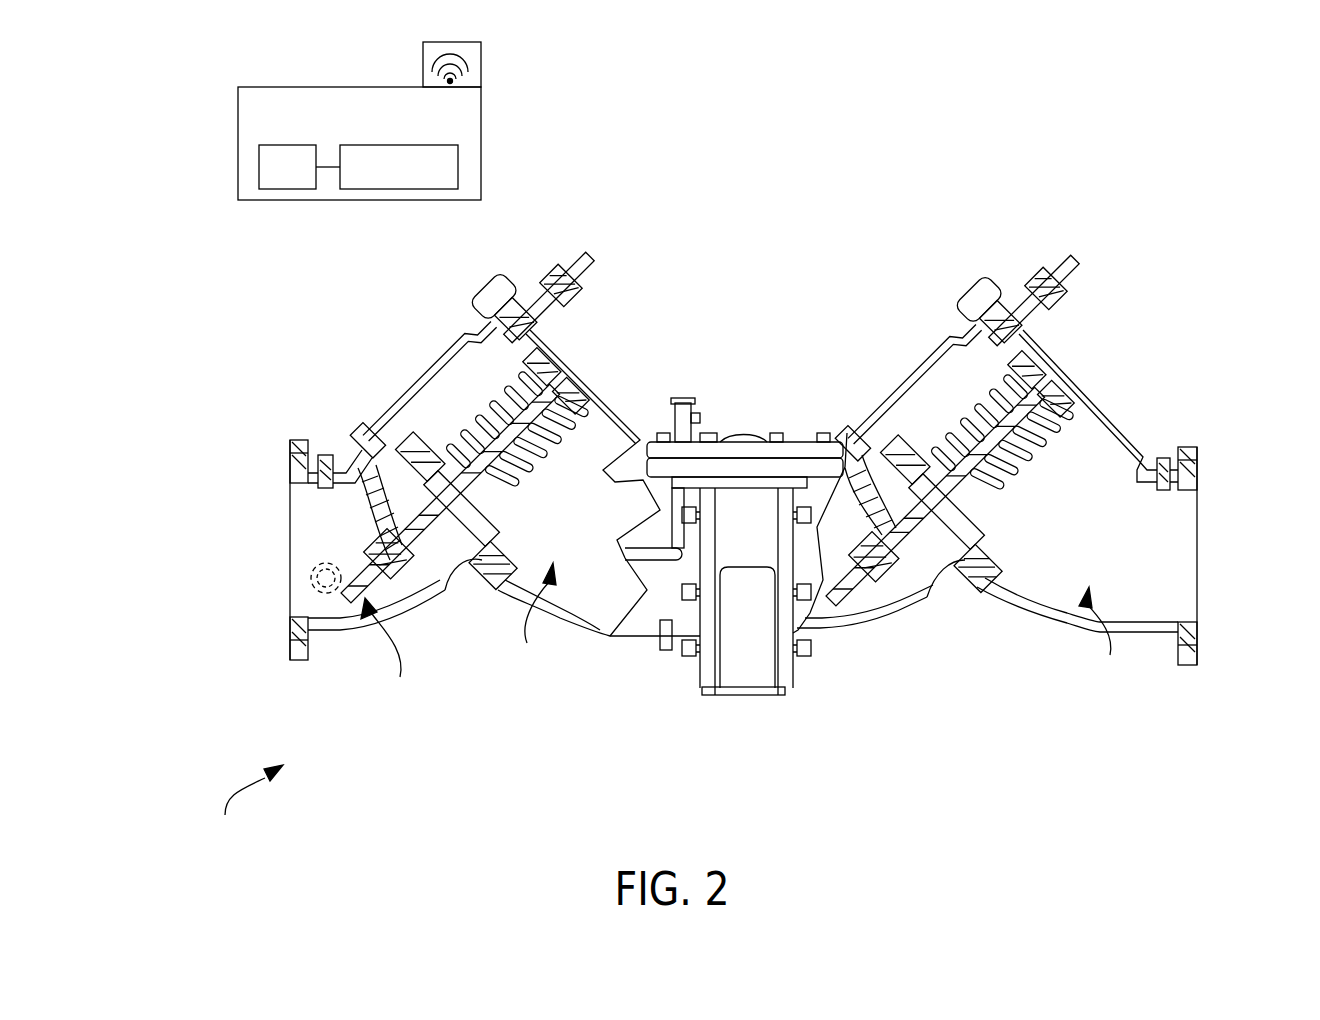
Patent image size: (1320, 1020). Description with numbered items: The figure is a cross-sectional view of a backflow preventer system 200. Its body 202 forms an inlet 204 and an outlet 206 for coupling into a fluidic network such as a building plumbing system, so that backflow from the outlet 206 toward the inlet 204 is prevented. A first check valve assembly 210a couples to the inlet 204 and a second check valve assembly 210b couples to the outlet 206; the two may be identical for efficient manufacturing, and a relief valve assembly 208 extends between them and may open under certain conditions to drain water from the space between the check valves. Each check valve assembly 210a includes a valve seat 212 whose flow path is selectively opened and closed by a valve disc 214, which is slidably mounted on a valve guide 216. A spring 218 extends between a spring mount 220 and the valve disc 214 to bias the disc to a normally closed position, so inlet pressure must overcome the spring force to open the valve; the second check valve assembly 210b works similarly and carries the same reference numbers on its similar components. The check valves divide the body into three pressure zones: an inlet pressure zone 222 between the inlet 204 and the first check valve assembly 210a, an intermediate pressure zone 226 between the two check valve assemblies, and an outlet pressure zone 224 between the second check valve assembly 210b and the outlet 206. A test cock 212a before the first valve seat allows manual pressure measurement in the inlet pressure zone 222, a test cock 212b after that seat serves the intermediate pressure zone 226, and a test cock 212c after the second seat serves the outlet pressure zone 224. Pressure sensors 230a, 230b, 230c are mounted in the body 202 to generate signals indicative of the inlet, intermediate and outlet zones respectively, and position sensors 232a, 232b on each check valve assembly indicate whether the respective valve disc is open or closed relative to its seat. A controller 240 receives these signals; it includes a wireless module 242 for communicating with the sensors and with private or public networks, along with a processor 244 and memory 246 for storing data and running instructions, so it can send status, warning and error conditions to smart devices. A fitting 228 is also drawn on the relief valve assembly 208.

The backflow preventer (BFP) system 200 is at (245, 810).
The body 202 is at (743, 522).
The inlet 204 is at (298, 584).
The outlet 206 is at (1197, 567).
The relief valve assembly 208 is at (700, 665).
The first check valve assembly 210a is at (470, 456).
The second check valve assembly 210b is at (967, 452).
The valve seat 212 is at (975, 574).
The first test cock 212a is at (330, 596).
The second test cock 212b is at (575, 305).
The third test cock 212c is at (1057, 303).
The valve disc 214 is at (998, 537).
The valve guide 216 is at (373, 500).
The spring 218 is at (1033, 456).
The spring mount 220 is at (497, 410).
The inlet pressure zone 222 is at (389, 657).
The outlet pressure zone 224 is at (1102, 640).
The intermediate pressure zone 226 is at (532, 621).
The relief valve sensor 228 is at (682, 397).
The first pressure sensor 230a is at (322, 455).
The second pressure sensor 230b is at (665, 652).
The third pressure sensor 230c is at (1164, 457).
The first position sensor 232a is at (482, 562).
The second position sensor 232b is at (958, 570).
The controller 240 is at (271, 106).
The wireless module 242 is at (473, 52).
The processor 244 is at (259, 171).
The memory 246 is at (458, 171).